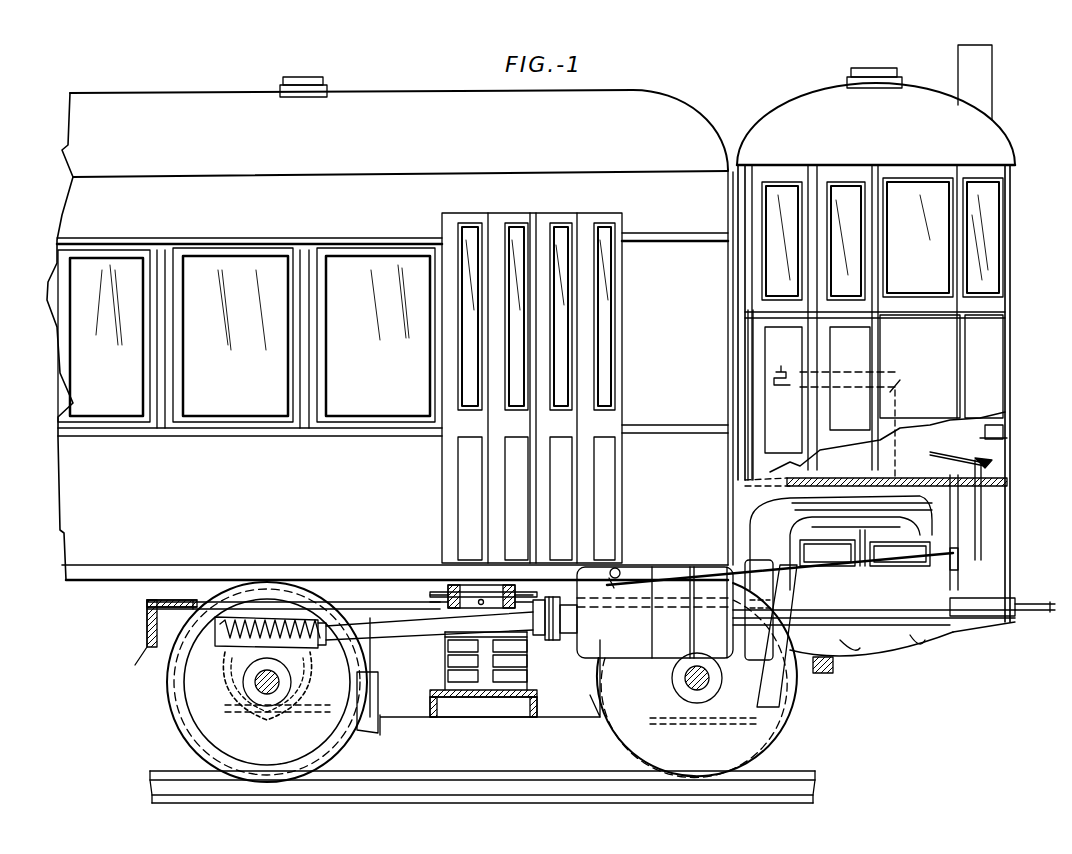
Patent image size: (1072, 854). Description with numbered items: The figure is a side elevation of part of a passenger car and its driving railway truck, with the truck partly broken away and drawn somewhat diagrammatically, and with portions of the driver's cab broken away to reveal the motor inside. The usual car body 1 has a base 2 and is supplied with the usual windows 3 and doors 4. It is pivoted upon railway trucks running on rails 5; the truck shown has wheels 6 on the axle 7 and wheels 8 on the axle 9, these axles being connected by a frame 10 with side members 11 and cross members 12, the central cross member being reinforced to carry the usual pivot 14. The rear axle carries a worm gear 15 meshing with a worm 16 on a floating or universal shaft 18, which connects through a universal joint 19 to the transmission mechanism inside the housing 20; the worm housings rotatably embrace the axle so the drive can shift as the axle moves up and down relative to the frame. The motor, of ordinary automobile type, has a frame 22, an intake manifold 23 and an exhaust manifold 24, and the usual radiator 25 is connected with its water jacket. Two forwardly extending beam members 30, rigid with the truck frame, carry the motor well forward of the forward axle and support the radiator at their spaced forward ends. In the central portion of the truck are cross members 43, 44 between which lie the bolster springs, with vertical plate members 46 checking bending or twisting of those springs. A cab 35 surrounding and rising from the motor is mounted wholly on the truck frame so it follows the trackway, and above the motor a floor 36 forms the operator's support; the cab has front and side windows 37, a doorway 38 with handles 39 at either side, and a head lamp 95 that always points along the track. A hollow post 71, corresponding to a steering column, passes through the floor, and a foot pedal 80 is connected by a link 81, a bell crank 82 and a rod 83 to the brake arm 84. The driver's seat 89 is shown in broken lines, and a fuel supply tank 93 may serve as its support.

The car body 1 is at (390, 328).
The base 2 is at (365, 565).
The windows 3 is at (246, 335).
The doors 4 is at (445, 468).
The rails 5 is at (170, 775).
The wheels 6 is at (267, 682).
The axle 7 is at (280, 682).
The wheels 8 is at (697, 680).
The axle 9 is at (672, 678).
The truck frame 10 is at (147, 605).
The side members 11 is at (485, 720).
The cross members 12 is at (828, 673).
The pivot 14 is at (455, 585).
The worm gear 15 is at (284, 686).
The worm 16 is at (230, 658).
The floating or universal shaft 18 is at (425, 628).
The universal joint 19 is at (552, 640).
The housing 20 is at (592, 655).
The motor frame 22 is at (915, 645).
The intake manifold 23 is at (868, 553).
The exhaust manifold 24 is at (841, 543).
The radiator 25 is at (985, 500).
The beam members 30 is at (930, 585).
The cab 35 is at (1003, 340).
The floor 36 is at (830, 472).
The windows 37 is at (882, 239).
The doorway 38 is at (817, 390).
The handles 39 is at (918, 376).
The cross member 43 is at (440, 700).
The cross member 44 is at (460, 588).
The vertical plate members 46 is at (445, 665).
The hollow post 71 is at (990, 545).
The foot pedal 80 is at (1003, 425).
The link 81 is at (992, 465).
The bell crank 82 is at (985, 572).
The rod 83 is at (810, 566).
The brake arm 84 is at (640, 572).
The driver's seat 89 is at (895, 375).
The fuel supply tank 93 is at (905, 455).
The head lamp 95 is at (992, 65).